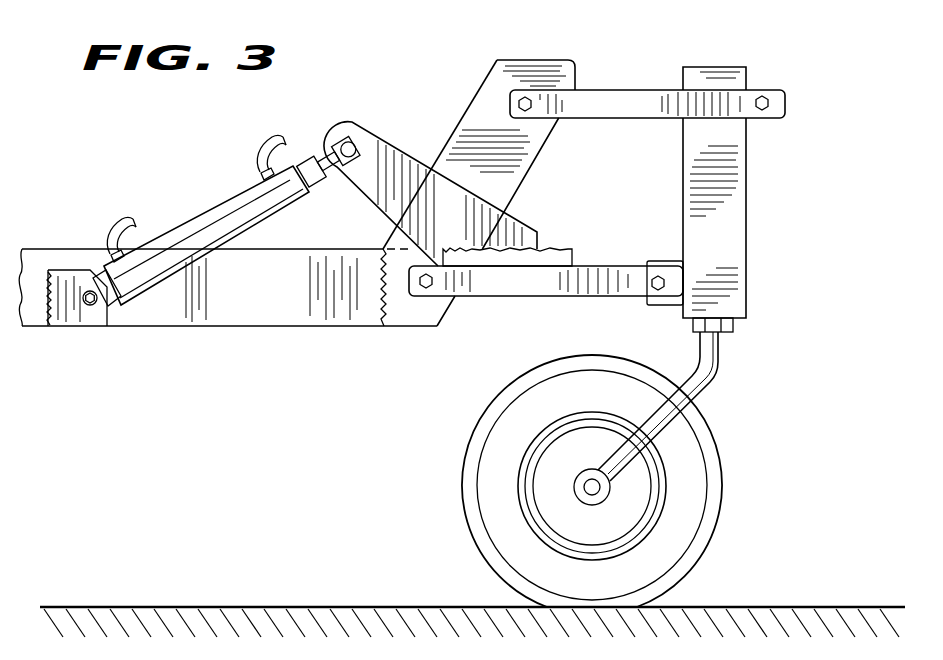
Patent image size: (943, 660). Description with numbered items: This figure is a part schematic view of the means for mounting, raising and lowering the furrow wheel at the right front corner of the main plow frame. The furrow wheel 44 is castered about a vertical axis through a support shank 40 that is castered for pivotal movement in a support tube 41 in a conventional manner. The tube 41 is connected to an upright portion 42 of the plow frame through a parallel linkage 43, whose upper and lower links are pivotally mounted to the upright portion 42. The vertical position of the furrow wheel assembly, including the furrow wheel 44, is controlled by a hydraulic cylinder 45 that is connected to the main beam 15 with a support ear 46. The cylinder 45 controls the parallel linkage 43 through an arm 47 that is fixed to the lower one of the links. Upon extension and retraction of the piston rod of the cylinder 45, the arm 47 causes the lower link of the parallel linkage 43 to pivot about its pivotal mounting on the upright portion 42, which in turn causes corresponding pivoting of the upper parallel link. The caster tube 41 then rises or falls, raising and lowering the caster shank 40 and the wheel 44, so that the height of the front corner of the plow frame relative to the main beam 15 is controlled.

The main beam 15 is at (318, 305).
The support shank 40 is at (723, 347).
The support tube 41 is at (727, 232).
The upright portion 42 is at (488, 82).
The parallel linkage 43 is at (634, 84).
The furrow wheel 44 is at (725, 492).
The hydraulic cylinder 45 is at (227, 220).
The support ear 46 is at (66, 306).
The arm 47 is at (392, 162).